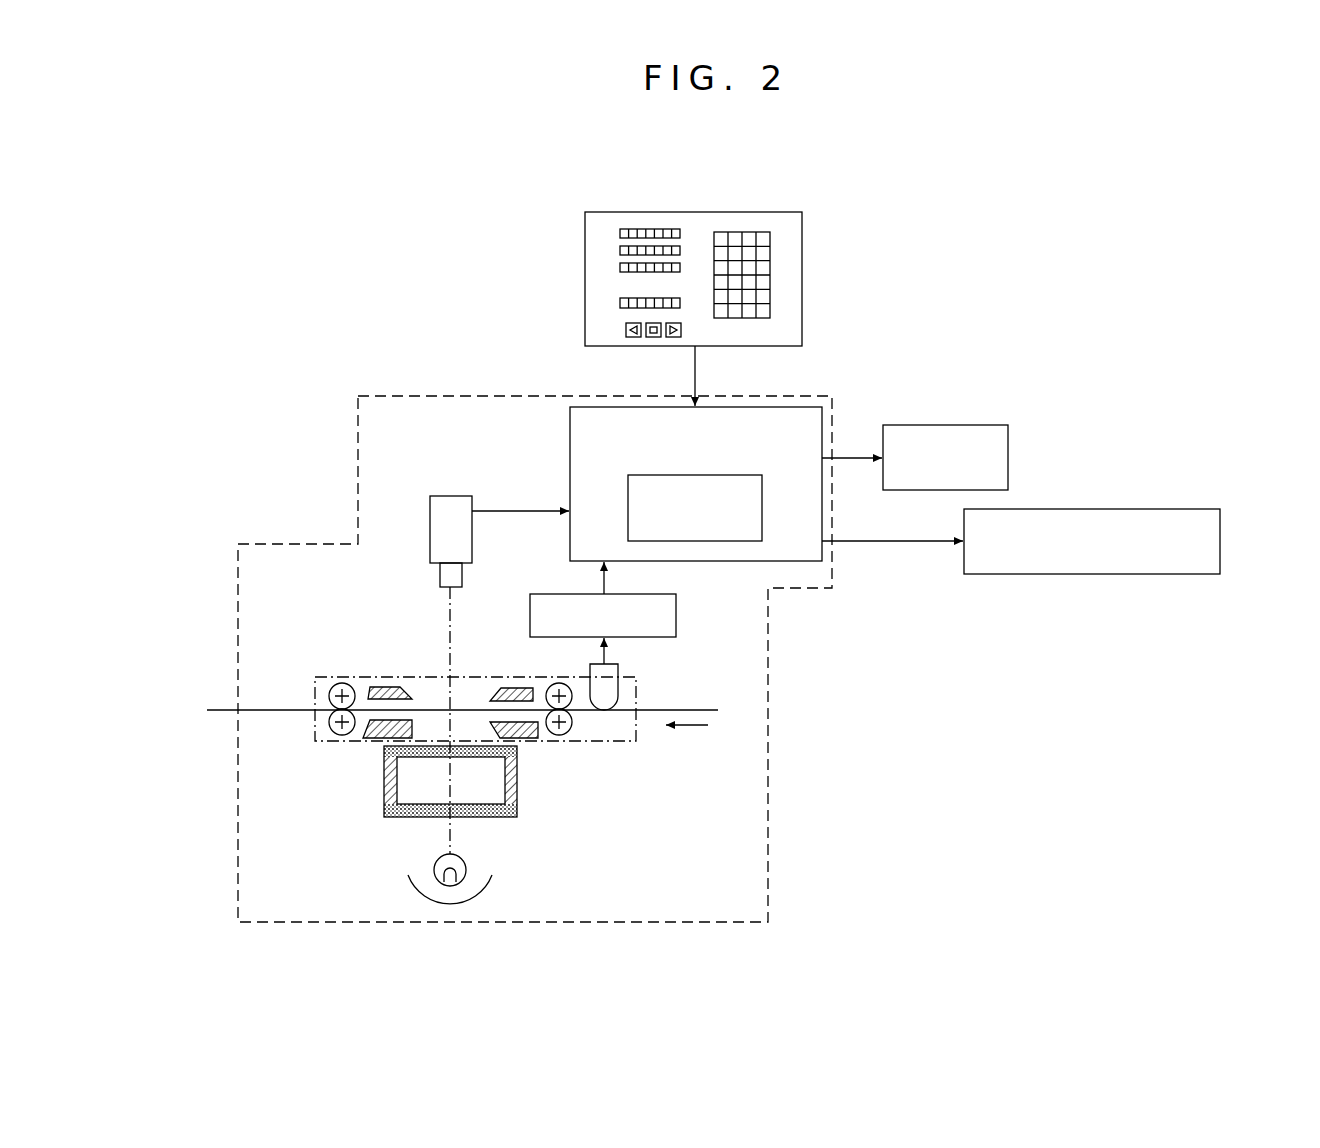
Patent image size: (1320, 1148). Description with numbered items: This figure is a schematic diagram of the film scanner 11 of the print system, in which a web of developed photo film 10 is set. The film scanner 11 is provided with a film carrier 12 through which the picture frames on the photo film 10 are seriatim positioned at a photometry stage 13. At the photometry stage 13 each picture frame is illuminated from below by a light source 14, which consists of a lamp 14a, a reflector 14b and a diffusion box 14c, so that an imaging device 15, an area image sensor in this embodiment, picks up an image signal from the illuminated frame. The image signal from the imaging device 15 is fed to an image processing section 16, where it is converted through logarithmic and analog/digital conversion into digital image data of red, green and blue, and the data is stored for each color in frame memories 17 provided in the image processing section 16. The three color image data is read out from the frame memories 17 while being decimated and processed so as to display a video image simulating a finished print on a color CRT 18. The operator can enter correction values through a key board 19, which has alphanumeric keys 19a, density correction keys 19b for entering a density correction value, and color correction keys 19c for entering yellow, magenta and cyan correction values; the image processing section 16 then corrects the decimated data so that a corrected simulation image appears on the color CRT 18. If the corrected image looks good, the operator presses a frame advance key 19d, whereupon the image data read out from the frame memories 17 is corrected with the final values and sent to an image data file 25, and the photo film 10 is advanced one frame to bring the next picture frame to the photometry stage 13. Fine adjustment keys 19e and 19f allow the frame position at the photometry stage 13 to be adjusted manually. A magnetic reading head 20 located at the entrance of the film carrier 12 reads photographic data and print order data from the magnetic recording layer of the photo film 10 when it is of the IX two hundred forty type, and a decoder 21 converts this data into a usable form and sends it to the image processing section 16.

The photo film 10 is at (224, 710).
The film scanner 11 is at (482, 365).
The film carrier 12 is at (327, 676).
The photometry stage 13 is at (430, 690).
The light source 14 is at (509, 829).
The lamp 14a is at (468, 868).
The reflector 14b is at (480, 893).
The diffusion box 14c is at (498, 798).
The imaging device 15 is at (437, 503).
The image processing section 16 is at (727, 479).
The frame memories 17 is at (762, 480).
The color CRT 18 is at (1008, 440).
The key board 19 is at (693, 280).
The alphanumeric keys 19a is at (762, 294).
The density correction keys 19b is at (628, 300).
The color correction keys 19c is at (643, 250).
The frame advance key 19d is at (654, 339).
The fine adjustment key 19e is at (627, 339).
The fine adjustment key 19f is at (682, 334).
The magnetic reading head 20 is at (619, 669).
The decoder 21 is at (676, 612).
The image data file 25 is at (1220, 520).